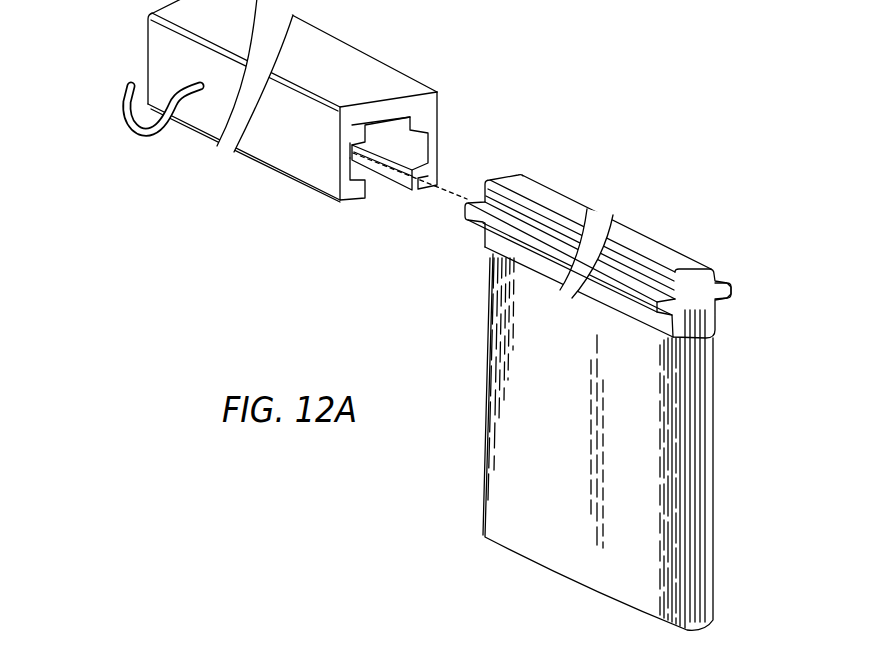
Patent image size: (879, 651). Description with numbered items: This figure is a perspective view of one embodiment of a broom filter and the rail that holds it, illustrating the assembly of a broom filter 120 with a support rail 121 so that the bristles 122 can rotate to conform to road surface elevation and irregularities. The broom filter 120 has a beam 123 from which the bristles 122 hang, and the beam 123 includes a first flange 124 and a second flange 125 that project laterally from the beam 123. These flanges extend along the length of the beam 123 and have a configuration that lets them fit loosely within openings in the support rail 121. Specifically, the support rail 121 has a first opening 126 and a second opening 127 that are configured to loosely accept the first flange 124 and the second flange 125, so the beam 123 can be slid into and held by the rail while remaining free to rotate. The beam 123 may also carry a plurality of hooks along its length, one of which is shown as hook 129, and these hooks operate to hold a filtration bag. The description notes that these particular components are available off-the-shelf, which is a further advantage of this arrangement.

The broom filter 120 is at (639, 185).
The support rail 121 is at (357, 52).
The bristles 122 is at (491, 352).
The beam 123 is at (647, 245).
The first flange 124 is at (476, 213).
The second flange 125 is at (732, 293).
The first opening 126 is at (350, 149).
The second opening 127 is at (421, 148).
The hook 129 is at (127, 104).